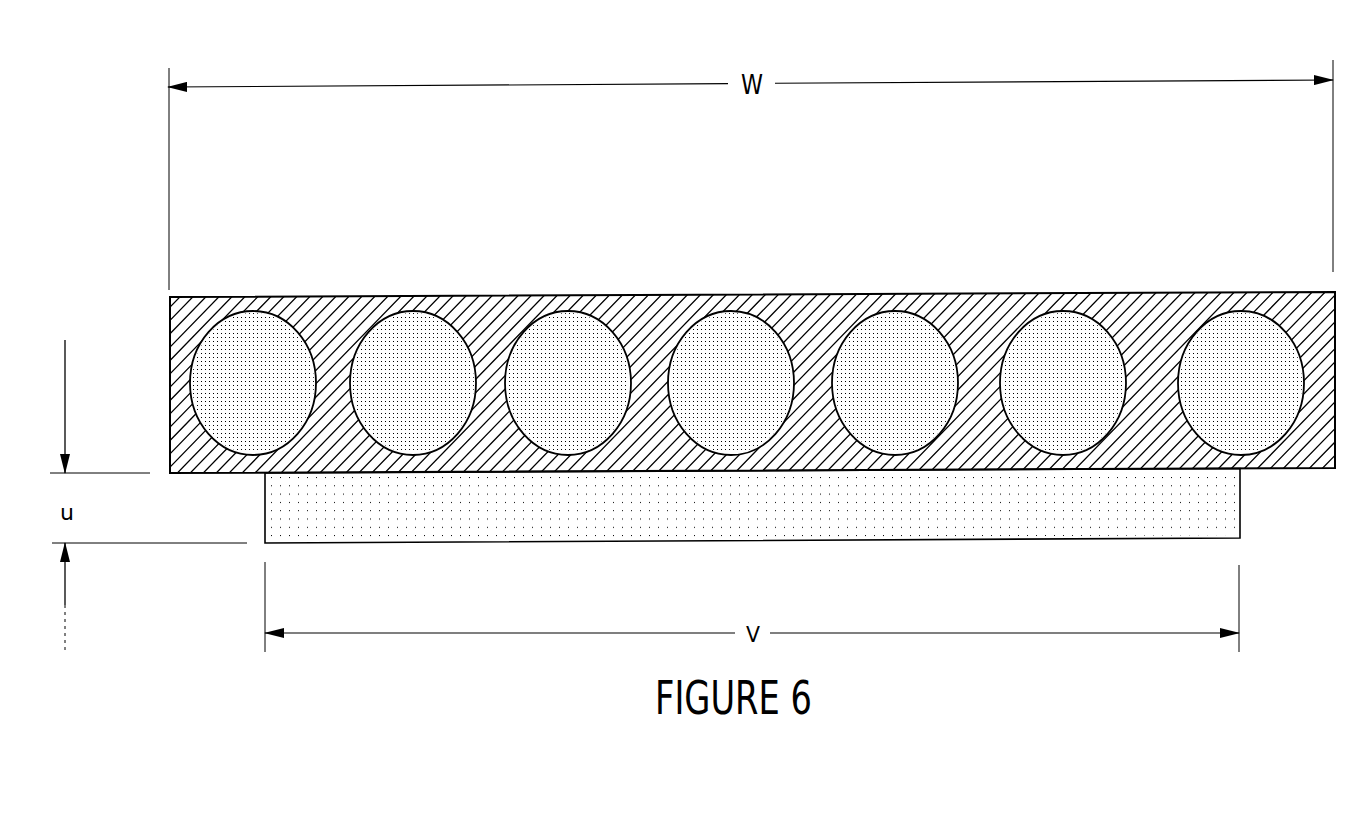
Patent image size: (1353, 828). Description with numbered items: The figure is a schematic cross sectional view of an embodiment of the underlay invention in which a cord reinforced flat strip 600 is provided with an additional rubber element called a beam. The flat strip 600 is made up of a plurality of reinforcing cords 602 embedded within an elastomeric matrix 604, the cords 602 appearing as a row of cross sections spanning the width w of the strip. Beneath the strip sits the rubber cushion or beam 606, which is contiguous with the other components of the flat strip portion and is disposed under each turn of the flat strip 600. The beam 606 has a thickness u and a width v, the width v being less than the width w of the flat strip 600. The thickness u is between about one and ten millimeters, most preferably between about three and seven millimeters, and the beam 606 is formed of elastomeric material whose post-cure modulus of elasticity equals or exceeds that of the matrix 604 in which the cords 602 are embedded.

The cord reinforced flat strip 600 is at (676, 367).
The reinforcing cords 602 is at (248, 332).
The elastomeric matrix 604 is at (1152, 340).
The rubber cushion (beam) 606 is at (907, 498).